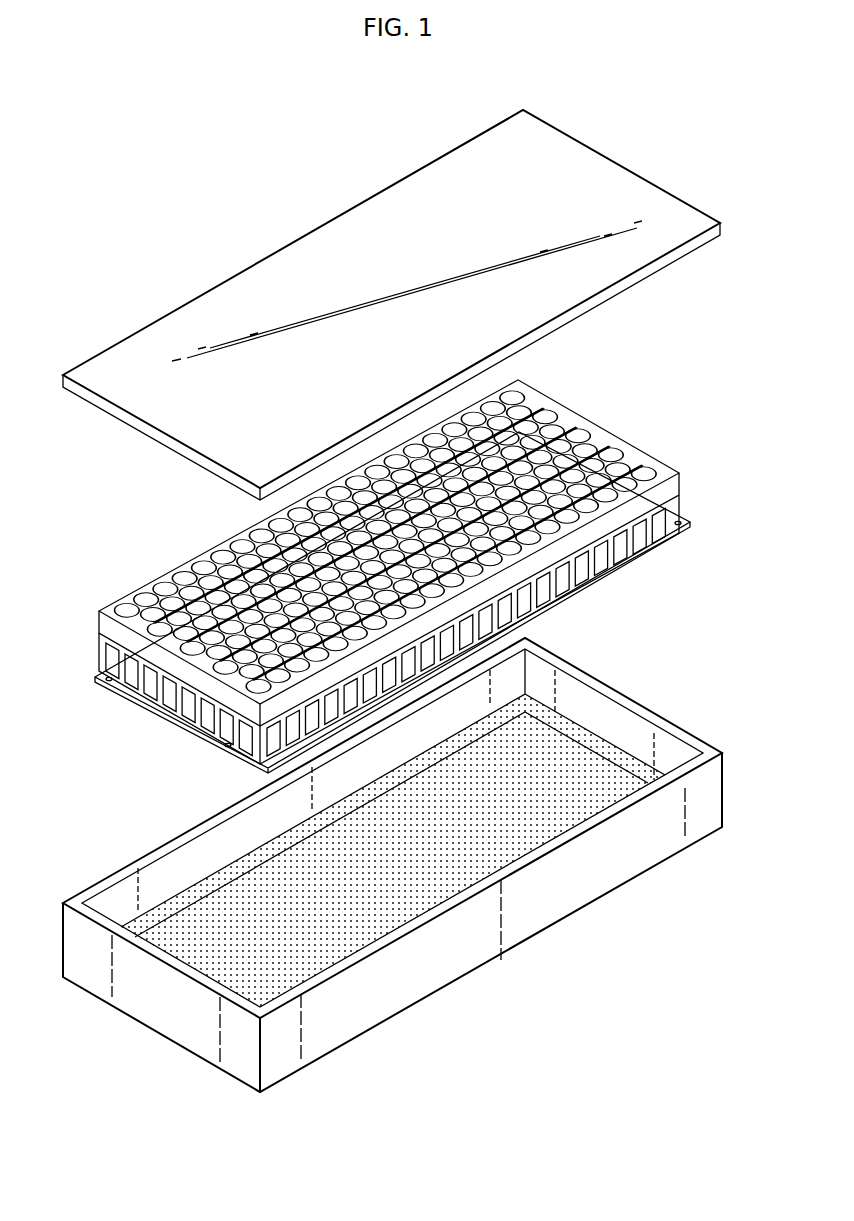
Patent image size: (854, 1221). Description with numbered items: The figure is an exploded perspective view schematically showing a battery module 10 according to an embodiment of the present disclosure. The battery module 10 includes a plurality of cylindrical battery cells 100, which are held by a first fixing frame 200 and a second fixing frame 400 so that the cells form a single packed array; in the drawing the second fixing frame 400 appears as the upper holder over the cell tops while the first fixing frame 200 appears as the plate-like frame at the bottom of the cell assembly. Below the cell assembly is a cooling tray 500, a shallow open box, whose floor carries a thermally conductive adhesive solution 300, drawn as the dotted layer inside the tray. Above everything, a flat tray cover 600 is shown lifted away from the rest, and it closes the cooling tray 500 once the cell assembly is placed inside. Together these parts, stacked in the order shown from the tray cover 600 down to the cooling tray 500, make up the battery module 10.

The battery module 10 is at (194, 101).
The cylindrical battery cells 100 is at (659, 515).
The first fixing frame 200 is at (676, 550).
The thermally conductive adhesive solution 300 is at (207, 918).
The second fixing frame 400 is at (648, 448).
The cooling tray 500 is at (535, 948).
The tray cover 600 is at (364, 190).